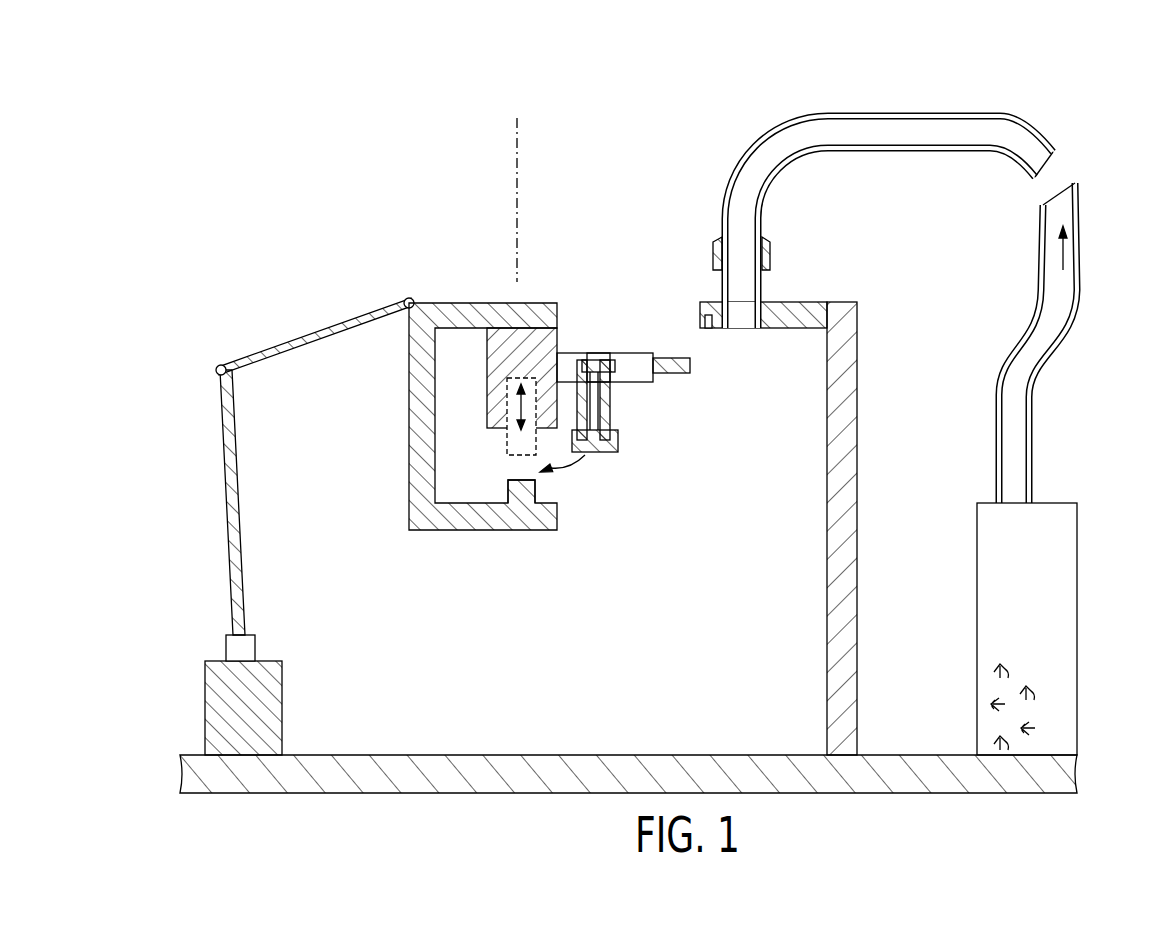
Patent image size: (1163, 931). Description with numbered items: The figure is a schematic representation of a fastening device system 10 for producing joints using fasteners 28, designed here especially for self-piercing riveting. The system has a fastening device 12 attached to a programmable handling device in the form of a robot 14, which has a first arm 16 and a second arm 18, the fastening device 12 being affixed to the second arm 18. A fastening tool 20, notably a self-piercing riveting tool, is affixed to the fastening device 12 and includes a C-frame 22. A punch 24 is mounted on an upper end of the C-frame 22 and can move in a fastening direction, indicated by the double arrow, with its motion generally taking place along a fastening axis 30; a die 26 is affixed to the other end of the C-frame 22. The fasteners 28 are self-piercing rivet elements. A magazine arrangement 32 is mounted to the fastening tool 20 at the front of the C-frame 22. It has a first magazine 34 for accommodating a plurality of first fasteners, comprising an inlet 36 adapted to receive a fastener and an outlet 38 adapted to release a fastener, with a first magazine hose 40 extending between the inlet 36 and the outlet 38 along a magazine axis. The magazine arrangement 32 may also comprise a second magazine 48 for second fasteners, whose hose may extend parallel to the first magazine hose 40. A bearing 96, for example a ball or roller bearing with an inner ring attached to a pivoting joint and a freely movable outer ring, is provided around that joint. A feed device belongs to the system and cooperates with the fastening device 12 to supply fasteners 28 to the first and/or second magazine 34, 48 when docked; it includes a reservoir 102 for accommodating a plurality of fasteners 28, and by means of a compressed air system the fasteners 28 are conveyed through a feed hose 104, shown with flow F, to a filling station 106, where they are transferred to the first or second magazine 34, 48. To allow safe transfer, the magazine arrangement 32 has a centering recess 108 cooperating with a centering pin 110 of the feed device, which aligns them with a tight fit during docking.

The fastening device system 10 is at (1102, 132).
The fastening device 12 is at (487, 370).
The robot 14 is at (283, 690).
The first arm 16 is at (245, 565).
The second arm 18 is at (253, 348).
The fastening tool 20 is at (530, 345).
The C-frame 22 is at (445, 303).
The punch 24 is at (507, 440).
The die 26 is at (508, 490).
The fasteners 28 is at (1071, 203).
The fastening axis 30 is at (517, 148).
The magazine arrangement 32 is at (643, 354).
The first magazine 34 is at (612, 423).
The inlet 36 is at (592, 360).
The outlet 38 is at (606, 455).
The first magazine hose 40 is at (600, 398).
The second magazine 48 is at (588, 455).
The bearing 96 is at (770, 330).
The reservoir 102 is at (983, 598).
The feed hose 104 is at (762, 292).
The filling station 106 is at (889, 254).
The centering recess 108 is at (790, 330).
The centering pin 110 is at (633, 339).
The fluid flow F is at (869, 95).